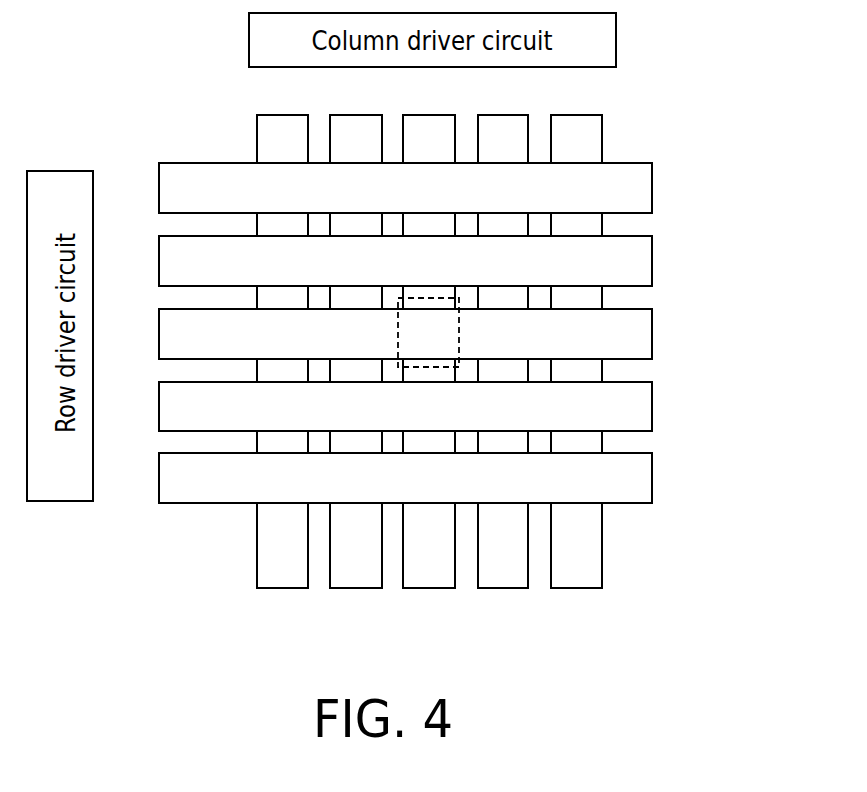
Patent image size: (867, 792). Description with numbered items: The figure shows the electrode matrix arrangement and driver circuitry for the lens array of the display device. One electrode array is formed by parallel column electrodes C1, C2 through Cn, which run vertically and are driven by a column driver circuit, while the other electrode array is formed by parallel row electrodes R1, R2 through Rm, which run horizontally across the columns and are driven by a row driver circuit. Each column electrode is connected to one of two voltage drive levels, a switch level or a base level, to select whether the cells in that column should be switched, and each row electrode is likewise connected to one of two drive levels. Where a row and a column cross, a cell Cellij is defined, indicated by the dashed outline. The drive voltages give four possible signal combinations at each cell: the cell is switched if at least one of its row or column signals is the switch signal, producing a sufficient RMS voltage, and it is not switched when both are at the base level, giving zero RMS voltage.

The column electrode C1 is at (282, 335).
The column electrode C2 is at (356, 335).
The column electrode Cn is at (576, 335).
The row electrode R1 is at (383, 188).
The row electrode R2 is at (383, 261).
The row electrode Rm is at (383, 478).
The cell Cellij is at (470, 331).